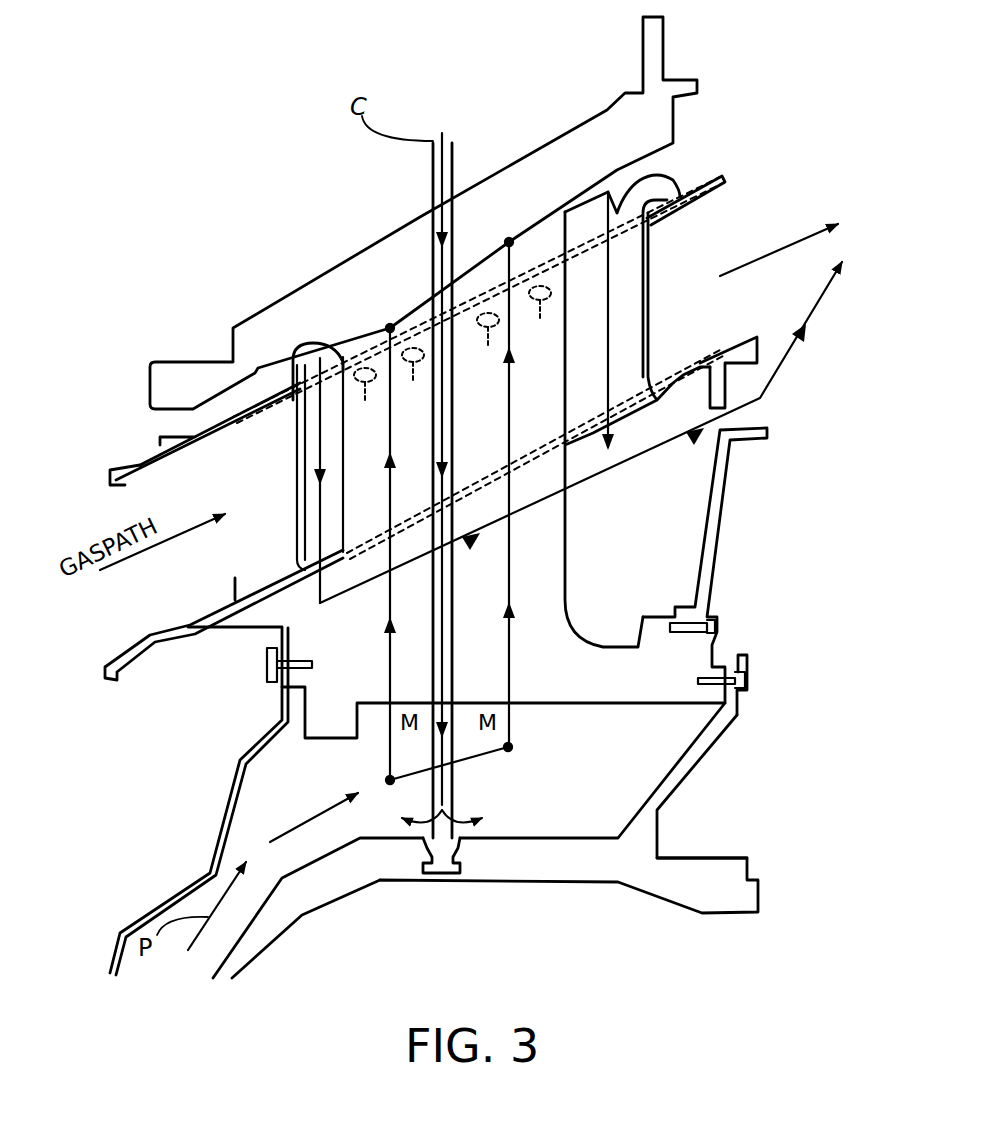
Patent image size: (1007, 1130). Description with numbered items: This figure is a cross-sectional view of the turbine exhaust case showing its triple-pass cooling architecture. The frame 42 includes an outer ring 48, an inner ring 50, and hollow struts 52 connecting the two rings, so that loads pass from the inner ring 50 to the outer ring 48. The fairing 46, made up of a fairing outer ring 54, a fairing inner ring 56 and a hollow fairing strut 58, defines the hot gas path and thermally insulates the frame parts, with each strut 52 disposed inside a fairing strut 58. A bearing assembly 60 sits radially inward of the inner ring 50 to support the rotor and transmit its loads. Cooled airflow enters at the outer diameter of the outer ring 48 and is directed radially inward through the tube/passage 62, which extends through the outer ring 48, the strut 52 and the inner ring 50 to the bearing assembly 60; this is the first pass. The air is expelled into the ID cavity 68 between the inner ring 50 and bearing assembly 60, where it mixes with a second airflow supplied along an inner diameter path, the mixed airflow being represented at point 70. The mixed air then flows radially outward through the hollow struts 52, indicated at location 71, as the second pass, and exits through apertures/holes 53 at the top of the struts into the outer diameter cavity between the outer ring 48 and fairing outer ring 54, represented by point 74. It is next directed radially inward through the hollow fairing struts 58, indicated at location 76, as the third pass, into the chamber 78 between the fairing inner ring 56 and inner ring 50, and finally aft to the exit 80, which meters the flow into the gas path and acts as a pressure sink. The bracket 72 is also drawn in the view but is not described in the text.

The frame 42 is at (604, 584).
The fairing 46 is at (630, 436).
The outer ring 48 is at (215, 370).
The inner ring 50 is at (640, 690).
The strut 52 is at (577, 273).
The apertures/holes 53 is at (451, 356).
The fairing outer ring 54 is at (270, 413).
The fairing inner ring 56 is at (235, 582).
The fairing strut 58 is at (650, 343).
The bearing assembly 60 is at (657, 848).
The tube/passage 62 is at (455, 160).
The ID cavity 68 is at (560, 798).
The point 70 is at (390, 780).
The location 71 is at (538, 400).
The mounting bracket 72 is at (270, 667).
The point 74 is at (390, 326).
The location 76 is at (322, 502).
The chamber 78 is at (638, 508).
The exit 80 is at (728, 403).